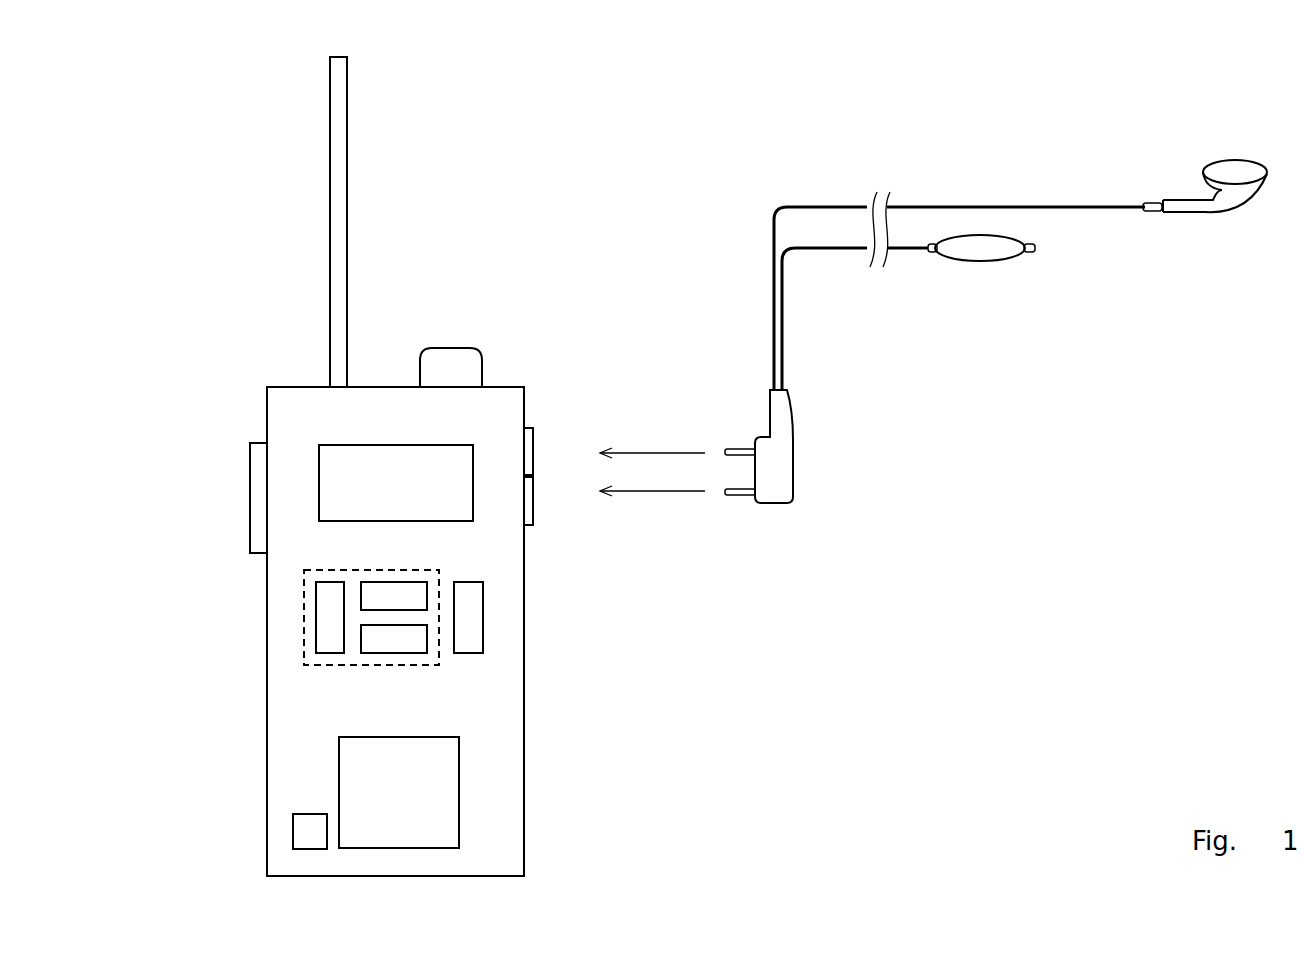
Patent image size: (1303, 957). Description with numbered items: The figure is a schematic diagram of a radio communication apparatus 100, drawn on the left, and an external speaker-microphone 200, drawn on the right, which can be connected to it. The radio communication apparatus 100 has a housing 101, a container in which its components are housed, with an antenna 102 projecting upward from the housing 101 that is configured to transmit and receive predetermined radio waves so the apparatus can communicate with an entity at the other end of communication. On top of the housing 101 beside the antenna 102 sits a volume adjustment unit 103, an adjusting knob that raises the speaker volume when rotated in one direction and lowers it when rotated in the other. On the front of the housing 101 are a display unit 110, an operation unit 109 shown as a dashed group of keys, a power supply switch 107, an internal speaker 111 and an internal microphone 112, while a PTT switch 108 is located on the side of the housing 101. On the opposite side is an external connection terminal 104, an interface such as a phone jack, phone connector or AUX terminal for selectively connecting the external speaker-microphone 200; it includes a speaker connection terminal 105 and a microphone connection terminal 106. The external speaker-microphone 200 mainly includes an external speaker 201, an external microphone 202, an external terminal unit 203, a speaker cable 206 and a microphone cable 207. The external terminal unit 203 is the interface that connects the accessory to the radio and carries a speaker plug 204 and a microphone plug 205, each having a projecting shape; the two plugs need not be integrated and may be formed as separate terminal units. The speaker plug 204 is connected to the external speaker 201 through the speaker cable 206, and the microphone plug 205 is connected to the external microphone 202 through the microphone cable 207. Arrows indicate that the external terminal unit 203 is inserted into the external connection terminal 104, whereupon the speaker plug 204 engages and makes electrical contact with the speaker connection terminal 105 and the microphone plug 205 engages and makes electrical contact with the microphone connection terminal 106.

The radio communication apparatus 100 is at (187, 170).
The housing 101 is at (267, 387).
The antenna 102 is at (345, 138).
The volume adjustment unit 103 is at (455, 348).
The external connection terminal 104 is at (608, 348).
The speaker connection terminal 105 is at (533, 442).
The microphone connection terminal 106 is at (533, 498).
The power supply switch 107 is at (485, 620).
The PTT switch 108 is at (250, 487).
The operation unit 109 is at (304, 625).
The display unit 110 is at (384, 445).
The internal speaker 111 is at (455, 783).
The internal microphone 112 is at (293, 832).
The external speaker-microphone 200 is at (817, 123).
The external speaker 201 is at (1238, 160).
The external microphone 202 is at (1003, 261).
The external terminal unit 203 is at (793, 455).
The speaker plug 204 is at (740, 449).
The microphone plug 205 is at (740, 496).
The speaker cable 206 is at (945, 207).
The microphone cable 207 is at (822, 248).